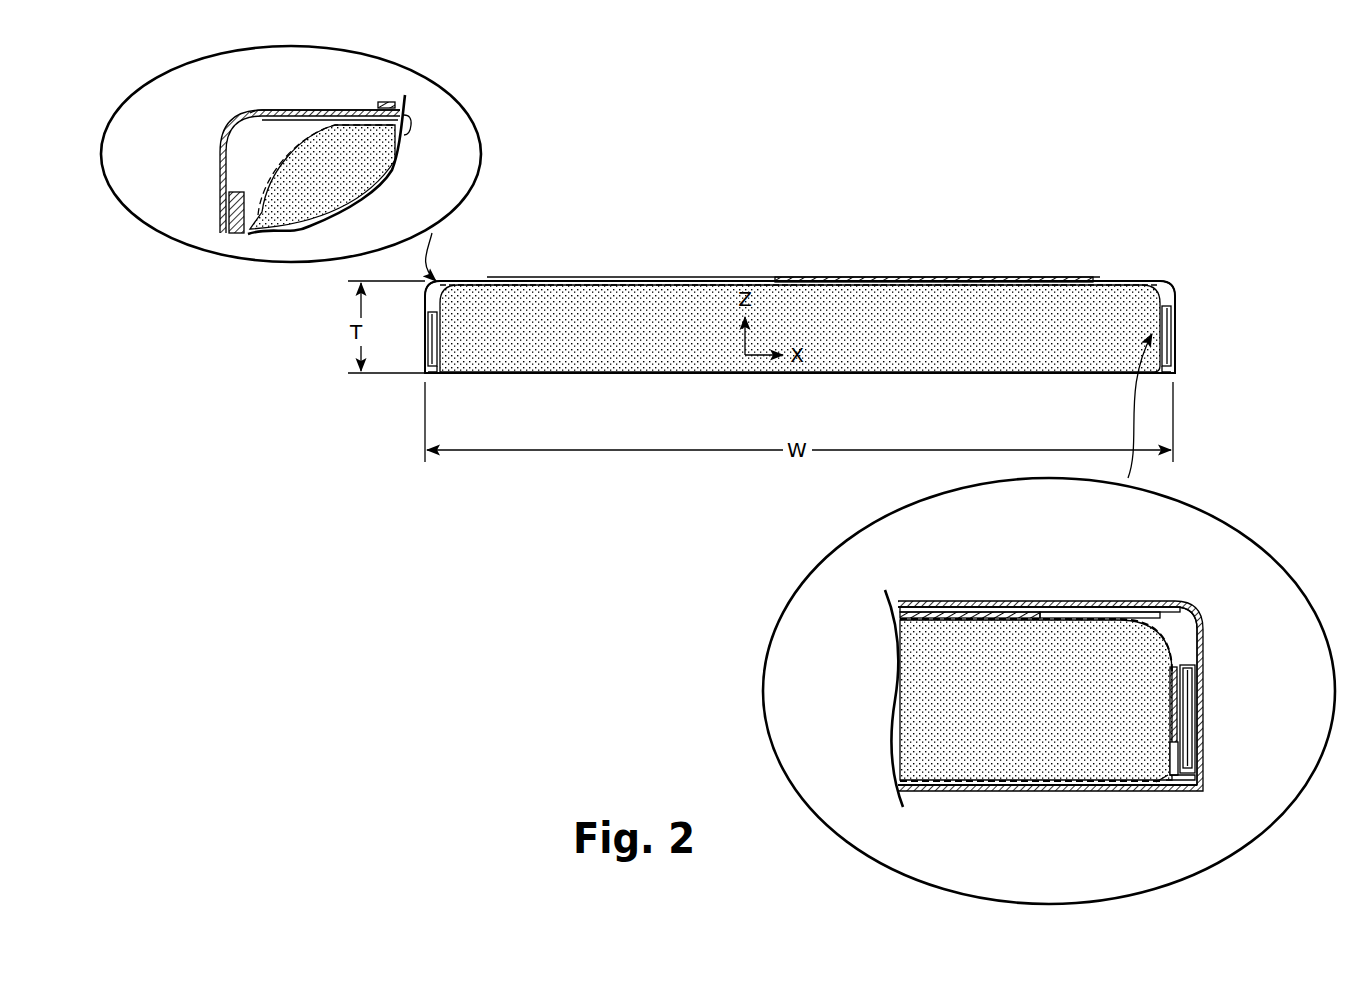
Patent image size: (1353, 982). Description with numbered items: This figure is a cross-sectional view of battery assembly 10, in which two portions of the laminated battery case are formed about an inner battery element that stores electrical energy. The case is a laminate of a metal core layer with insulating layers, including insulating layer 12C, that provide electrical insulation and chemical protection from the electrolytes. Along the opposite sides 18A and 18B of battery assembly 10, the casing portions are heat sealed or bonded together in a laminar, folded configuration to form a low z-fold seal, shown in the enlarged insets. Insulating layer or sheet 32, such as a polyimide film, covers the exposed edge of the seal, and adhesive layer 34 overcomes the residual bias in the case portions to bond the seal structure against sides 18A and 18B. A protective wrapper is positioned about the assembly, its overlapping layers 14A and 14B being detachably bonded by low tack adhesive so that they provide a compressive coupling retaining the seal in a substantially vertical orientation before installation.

The battery assembly 10 is at (1016, 172).
The insulating layer 12C is at (367, 130).
The first overlapping wrapper layer 14A is at (1022, 608).
The second overlapping wrapper layer 14B is at (922, 604).
The first side of battery assembly 18A is at (422, 352).
The second side of battery assembly 18B is at (1180, 333).
The insulating layer or sheet 32 is at (1205, 688).
The adhesive layer 34 is at (1172, 705).